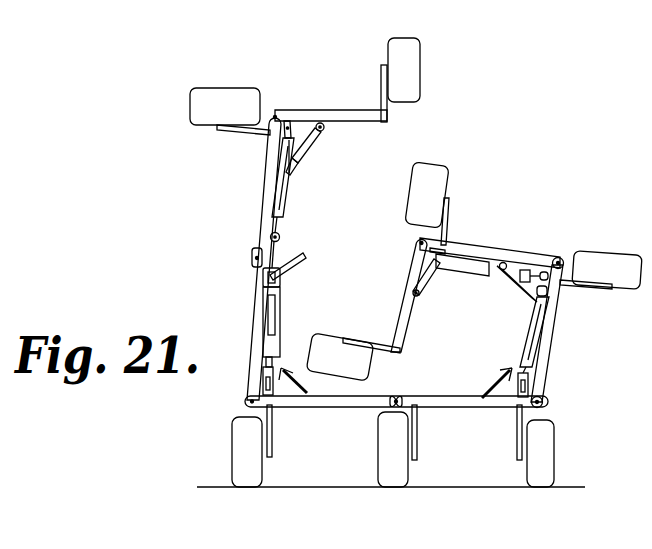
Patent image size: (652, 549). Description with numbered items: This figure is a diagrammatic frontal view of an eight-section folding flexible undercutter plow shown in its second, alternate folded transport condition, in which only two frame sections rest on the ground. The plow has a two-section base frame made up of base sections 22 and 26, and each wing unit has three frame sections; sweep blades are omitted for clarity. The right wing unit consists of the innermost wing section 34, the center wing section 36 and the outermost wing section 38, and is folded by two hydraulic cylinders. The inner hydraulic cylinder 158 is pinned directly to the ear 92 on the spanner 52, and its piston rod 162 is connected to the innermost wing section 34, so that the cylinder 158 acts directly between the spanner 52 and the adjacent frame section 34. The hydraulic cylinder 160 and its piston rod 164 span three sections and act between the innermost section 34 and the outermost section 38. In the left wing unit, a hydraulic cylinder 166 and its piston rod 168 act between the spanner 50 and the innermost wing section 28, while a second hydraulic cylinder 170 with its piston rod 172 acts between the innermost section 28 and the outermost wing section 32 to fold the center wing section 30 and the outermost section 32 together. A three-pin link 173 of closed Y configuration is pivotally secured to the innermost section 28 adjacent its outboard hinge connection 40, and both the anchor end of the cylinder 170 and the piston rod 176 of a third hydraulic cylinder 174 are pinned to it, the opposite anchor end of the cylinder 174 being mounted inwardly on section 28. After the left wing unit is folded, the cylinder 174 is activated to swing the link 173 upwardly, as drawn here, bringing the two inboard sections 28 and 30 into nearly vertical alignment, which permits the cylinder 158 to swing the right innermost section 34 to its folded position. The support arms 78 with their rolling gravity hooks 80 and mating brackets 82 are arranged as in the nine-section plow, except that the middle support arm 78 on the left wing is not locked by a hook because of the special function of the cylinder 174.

The base frame section 22 is at (362, 408).
The base frame section 26 is at (472, 408).
The innermost wing section 28 is at (247, 318).
The center wing section 30 is at (266, 149).
The outermost wing section 32 is at (359, 111).
The innermost wing section 34 is at (547, 367).
The center wing section 36 is at (497, 258).
The outermost wing section 38 is at (409, 275).
The hinge connection 40 is at (394, 397).
The spanner 50 is at (276, 400).
The spanner 52 is at (545, 400).
The support arm 78 is at (300, 164).
The rolling gravity hook 80 is at (324, 128).
The mating bracket 82 is at (312, 137).
The ear 92 is at (263, 368).
The hydraulic cylinder 158 is at (531, 342).
The hydraulic cylinder 160 is at (472, 271).
The piston rod 162 is at (549, 302).
The piston rod 164 is at (440, 249).
The hydraulic cylinder 166 is at (275, 352).
The piston rod 168 is at (262, 281).
The hydraulic cylinder 170 is at (274, 193).
The piston rod 172 is at (291, 124).
The three-pin link 173 is at (270, 242).
The hydraulic cylinder 174 is at (283, 280).
The piston rod 176 is at (284, 258).